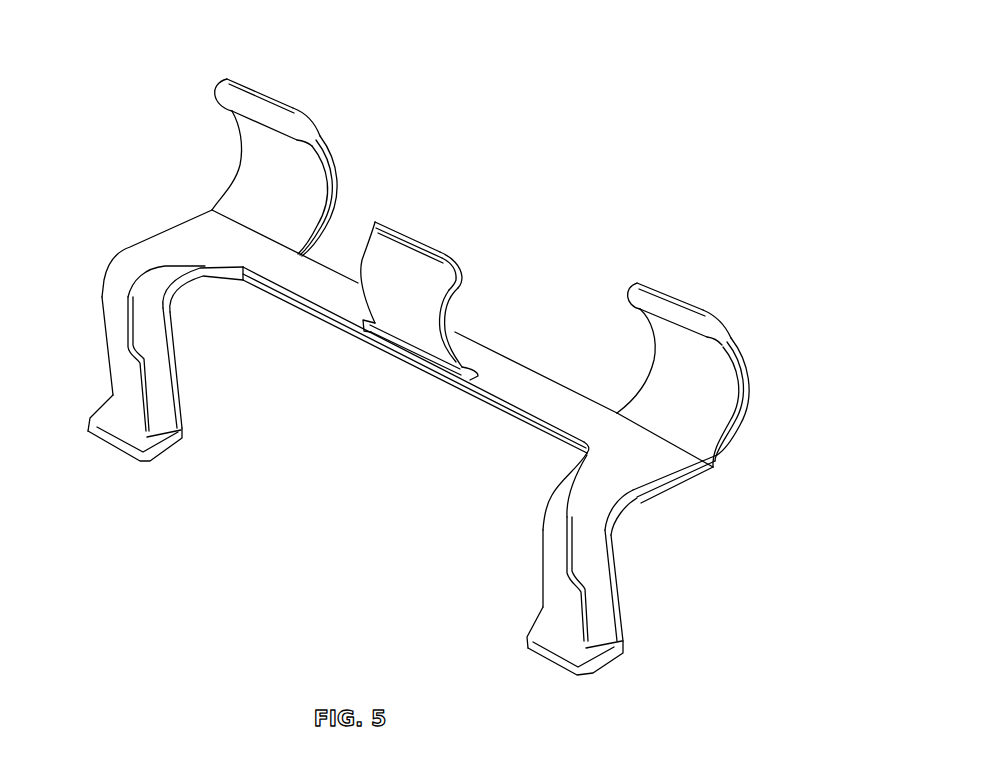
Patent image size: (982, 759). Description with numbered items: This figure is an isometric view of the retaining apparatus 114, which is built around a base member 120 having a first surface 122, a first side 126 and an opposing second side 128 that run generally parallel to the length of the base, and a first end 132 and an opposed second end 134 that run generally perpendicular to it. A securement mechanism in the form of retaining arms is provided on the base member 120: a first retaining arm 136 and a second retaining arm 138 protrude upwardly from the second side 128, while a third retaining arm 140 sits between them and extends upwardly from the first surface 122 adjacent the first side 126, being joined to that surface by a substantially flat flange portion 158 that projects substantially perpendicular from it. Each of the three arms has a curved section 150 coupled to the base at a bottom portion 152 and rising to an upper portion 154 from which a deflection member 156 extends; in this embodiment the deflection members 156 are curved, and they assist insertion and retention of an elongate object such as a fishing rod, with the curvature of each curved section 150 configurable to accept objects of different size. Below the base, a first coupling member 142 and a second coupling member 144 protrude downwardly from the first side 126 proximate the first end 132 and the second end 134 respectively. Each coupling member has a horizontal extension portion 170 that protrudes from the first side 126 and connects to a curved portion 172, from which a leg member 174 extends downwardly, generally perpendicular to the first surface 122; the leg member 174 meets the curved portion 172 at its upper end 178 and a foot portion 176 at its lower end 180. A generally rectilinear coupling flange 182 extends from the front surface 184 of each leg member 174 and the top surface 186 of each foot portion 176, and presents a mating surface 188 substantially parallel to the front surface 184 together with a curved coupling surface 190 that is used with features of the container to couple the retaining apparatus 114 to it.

The retaining apparatus 114 is at (663, 200).
The base member 120 is at (490, 373).
The first surface 122 is at (530, 393).
The first side 126 is at (303, 306).
The second side 128 is at (330, 263).
The first end 132 is at (712, 466).
The second end 134 is at (161, 234).
The first retaining arm 136 is at (751, 364).
The second retaining arm 138 is at (327, 147).
The third retaining arm 140 is at (397, 297).
The first coupling member 142 is at (550, 527).
The second coupling member 144 is at (110, 310).
The curved section 150 is at (343, 180).
The bottom portion 152 is at (217, 187).
The upper portion 154 is at (223, 107).
The deflection member 156 is at (255, 102).
The flange portion 158 is at (422, 352).
The horizontal extension portion 170 is at (150, 243).
The curved portion 172 is at (167, 290).
The leg member 174 is at (160, 380).
The foot portion 176 is at (130, 443).
The upper end 178 is at (157, 337).
The lower end 180 is at (163, 427).
The coupling flange 182 is at (157, 447).
The front surface 184 is at (115, 340).
The top surface 186 is at (103, 413).
The mating surface 188 is at (97, 427).
The curved coupling surface 190 is at (125, 377).